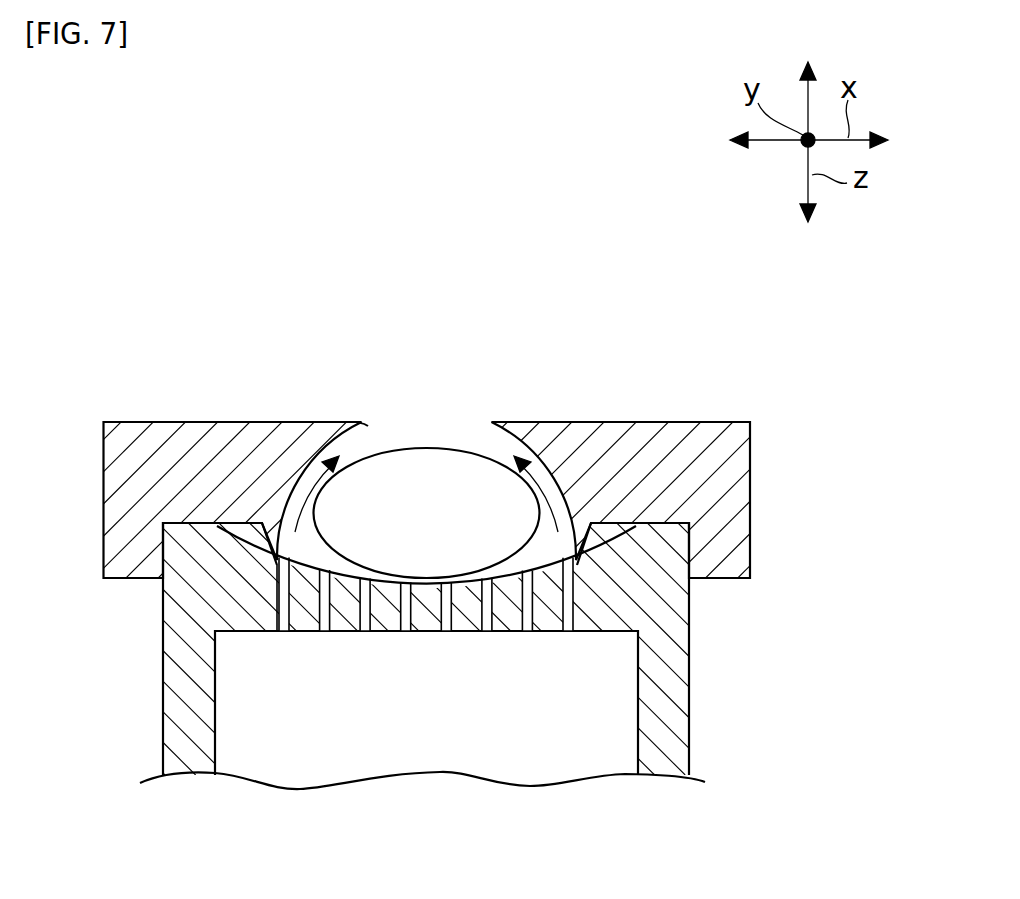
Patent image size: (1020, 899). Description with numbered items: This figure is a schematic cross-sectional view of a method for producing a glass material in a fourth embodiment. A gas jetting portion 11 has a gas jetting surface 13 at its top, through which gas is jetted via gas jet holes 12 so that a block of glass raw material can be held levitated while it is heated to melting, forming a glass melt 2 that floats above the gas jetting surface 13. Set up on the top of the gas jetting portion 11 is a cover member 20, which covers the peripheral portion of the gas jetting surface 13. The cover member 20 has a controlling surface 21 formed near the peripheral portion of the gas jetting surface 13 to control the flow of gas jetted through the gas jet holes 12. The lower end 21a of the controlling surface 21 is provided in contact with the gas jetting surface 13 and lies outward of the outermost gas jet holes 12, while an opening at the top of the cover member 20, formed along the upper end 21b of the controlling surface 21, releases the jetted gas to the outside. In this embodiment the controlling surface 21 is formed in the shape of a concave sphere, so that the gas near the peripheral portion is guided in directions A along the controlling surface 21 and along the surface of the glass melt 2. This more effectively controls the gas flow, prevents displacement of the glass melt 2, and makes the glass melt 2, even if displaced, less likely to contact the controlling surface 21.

The glass melt 2 is at (451, 450).
The gas jetting portion 11 is at (480, 683).
The gas jet holes 12 is at (285, 636).
The gas jetting surface 13 is at (424, 590).
The cover member 20 is at (451, 452).
The controlling surface 21 is at (309, 465).
The lower end of the controlling surface 21a is at (285, 620).
The upper end of the controlling surface 21b is at (369, 421).
The directions of gas flow A is at (298, 520).